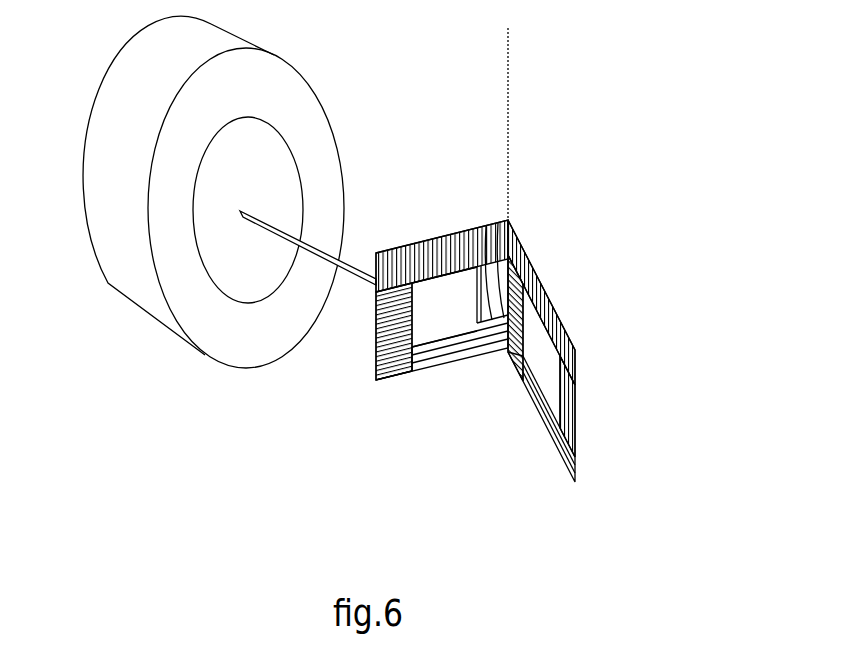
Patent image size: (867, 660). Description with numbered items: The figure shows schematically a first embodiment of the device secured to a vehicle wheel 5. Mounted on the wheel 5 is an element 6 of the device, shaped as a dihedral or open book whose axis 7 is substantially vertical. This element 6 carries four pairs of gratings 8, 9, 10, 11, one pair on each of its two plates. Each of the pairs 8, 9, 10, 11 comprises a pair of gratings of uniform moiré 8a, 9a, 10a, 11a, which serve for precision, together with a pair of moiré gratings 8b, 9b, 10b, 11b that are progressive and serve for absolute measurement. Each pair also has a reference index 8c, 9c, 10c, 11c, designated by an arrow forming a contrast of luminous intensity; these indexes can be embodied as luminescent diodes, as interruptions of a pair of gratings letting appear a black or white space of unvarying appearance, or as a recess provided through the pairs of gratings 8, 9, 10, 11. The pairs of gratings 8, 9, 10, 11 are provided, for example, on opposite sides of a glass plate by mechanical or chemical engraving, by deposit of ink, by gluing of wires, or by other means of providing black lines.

The wheel 5 is at (137, 92).
The element 6 is at (592, 348).
The axis 7 is at (508, 28).
The pair of gratings 8 is at (477, 228).
The pair of gratings of uniform moiré 8a is at (417, 257).
The pair of moiré gratings 8b is at (507, 220).
The reference index 8c is at (440, 278).
The pair of gratings 9 is at (410, 371).
The pair of gratings of uniform moiré 9a is at (375, 374).
The pair of moiré gratings 9b is at (448, 363).
The reference index 9c is at (412, 313).
The pair of gratings 10 is at (523, 380).
The pair of gratings of uniform moiré 10a is at (508, 353).
The pair of moiré gratings 10b is at (567, 453).
The reference index 10c is at (510, 356).
The pair of gratings 11 is at (558, 318).
The pair of gratings of uniform moiré 11a is at (535, 276).
The pair of moiré gratings 11b is at (572, 388).
The reference index 11c is at (522, 292).